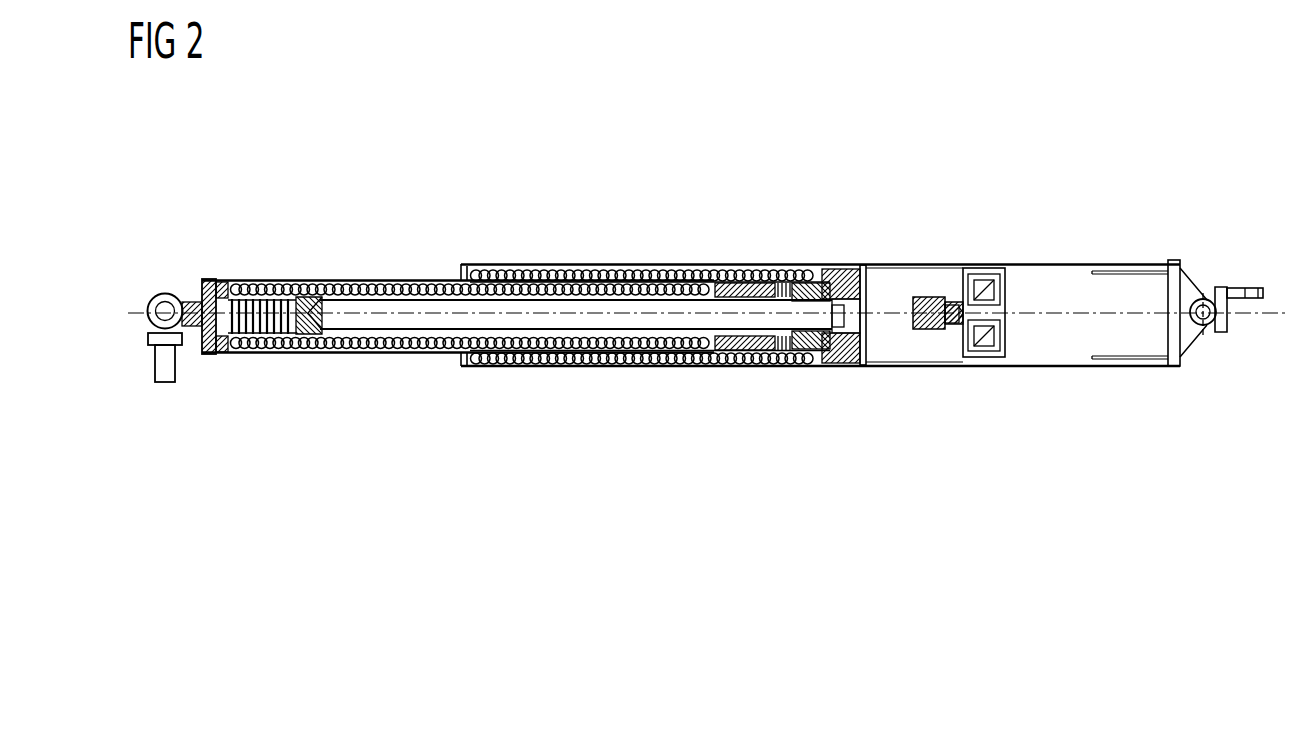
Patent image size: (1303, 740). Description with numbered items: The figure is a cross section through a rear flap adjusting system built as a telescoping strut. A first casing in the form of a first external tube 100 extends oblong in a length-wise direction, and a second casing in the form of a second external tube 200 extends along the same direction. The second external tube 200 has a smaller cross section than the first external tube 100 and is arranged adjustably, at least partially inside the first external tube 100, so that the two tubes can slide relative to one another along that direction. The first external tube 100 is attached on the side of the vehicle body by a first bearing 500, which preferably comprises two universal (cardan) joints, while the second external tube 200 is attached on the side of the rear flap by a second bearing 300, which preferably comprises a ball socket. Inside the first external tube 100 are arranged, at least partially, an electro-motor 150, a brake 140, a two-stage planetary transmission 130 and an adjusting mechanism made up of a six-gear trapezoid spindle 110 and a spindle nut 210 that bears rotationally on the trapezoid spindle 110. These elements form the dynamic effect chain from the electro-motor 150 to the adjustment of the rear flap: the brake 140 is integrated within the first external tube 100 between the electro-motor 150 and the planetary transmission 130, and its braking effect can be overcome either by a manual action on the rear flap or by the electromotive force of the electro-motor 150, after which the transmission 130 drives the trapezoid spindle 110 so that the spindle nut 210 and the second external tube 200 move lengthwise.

The first external tube 100 is at (846, 259).
The trapezoid spindle 110 is at (610, 323).
The two-stage planetary transmission 130 is at (917, 350).
The brake 140 is at (982, 268).
The electro-motor 150 is at (1066, 350).
The second external tube 200 is at (396, 274).
The spindle nut 210 is at (725, 356).
The second bearing 300 is at (168, 292).
The first bearing 500 is at (1214, 289).